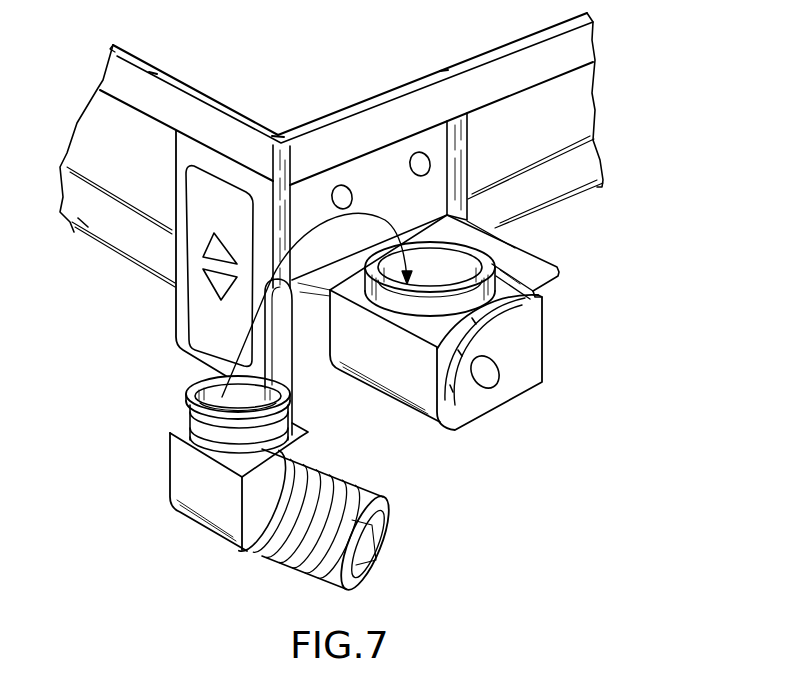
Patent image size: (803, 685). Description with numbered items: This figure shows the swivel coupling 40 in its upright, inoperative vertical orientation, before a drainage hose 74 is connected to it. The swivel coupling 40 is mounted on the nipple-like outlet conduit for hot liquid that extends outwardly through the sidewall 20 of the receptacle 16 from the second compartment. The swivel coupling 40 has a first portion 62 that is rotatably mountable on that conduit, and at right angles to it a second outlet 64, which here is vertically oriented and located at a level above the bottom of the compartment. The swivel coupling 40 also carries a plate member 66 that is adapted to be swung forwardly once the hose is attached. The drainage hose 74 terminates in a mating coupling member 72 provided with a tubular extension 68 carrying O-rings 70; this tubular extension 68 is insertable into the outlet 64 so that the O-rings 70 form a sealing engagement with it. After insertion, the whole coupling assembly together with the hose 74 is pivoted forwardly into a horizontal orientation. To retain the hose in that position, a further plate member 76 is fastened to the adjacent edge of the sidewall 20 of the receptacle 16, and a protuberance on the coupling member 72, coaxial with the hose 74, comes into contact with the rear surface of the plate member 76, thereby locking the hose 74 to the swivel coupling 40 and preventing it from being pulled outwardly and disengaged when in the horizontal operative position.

The receptacle 16 is at (247, 110).
The sidewall 20 is at (105, 222).
The swivel coupling 40 is at (493, 412).
The first portion 62 is at (303, 332).
The second outlet 64 is at (520, 247).
The plate member 66 is at (543, 288).
The tubular extension 68 is at (190, 380).
The O-rings 70 is at (190, 410).
The coupling member 72 is at (193, 517).
The drainage hose 74 is at (323, 575).
The plate member 76 is at (176, 324).